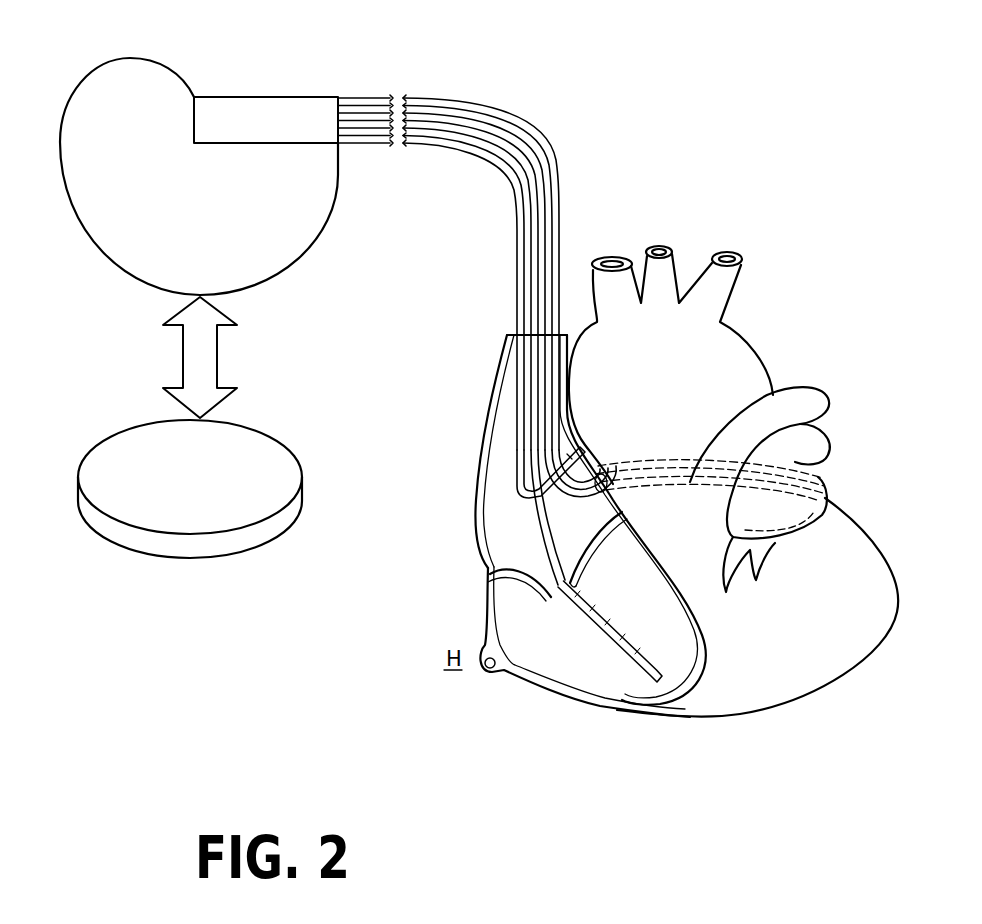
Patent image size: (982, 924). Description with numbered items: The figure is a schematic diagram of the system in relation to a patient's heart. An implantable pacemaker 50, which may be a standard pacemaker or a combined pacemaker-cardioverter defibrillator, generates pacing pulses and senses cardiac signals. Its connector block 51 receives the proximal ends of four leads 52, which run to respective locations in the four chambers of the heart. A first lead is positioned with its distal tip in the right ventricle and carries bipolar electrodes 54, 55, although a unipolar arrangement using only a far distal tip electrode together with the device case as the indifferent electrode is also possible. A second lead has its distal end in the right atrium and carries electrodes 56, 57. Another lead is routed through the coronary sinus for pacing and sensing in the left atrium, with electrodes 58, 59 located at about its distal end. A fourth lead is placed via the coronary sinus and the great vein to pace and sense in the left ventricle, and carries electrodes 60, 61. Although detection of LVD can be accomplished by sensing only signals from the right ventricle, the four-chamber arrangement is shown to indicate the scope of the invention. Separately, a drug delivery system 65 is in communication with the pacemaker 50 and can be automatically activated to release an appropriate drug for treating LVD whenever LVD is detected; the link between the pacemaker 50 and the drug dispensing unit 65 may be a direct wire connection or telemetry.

The pacemaker 50 is at (221, 157).
The connector block 51 is at (258, 117).
The leads 52 is at (455, 77).
The bipolar electrode 54 is at (596, 625).
The bipolar electrode 55 is at (653, 677).
The electrode 56 is at (475, 472).
The electrode 57 is at (577, 452).
The electrode 58 is at (719, 394).
The electrode 59 is at (719, 394).
The electrode 60 is at (719, 394).
The electrode 61 is at (673, 477).
The drug delivery system 65 is at (242, 513).